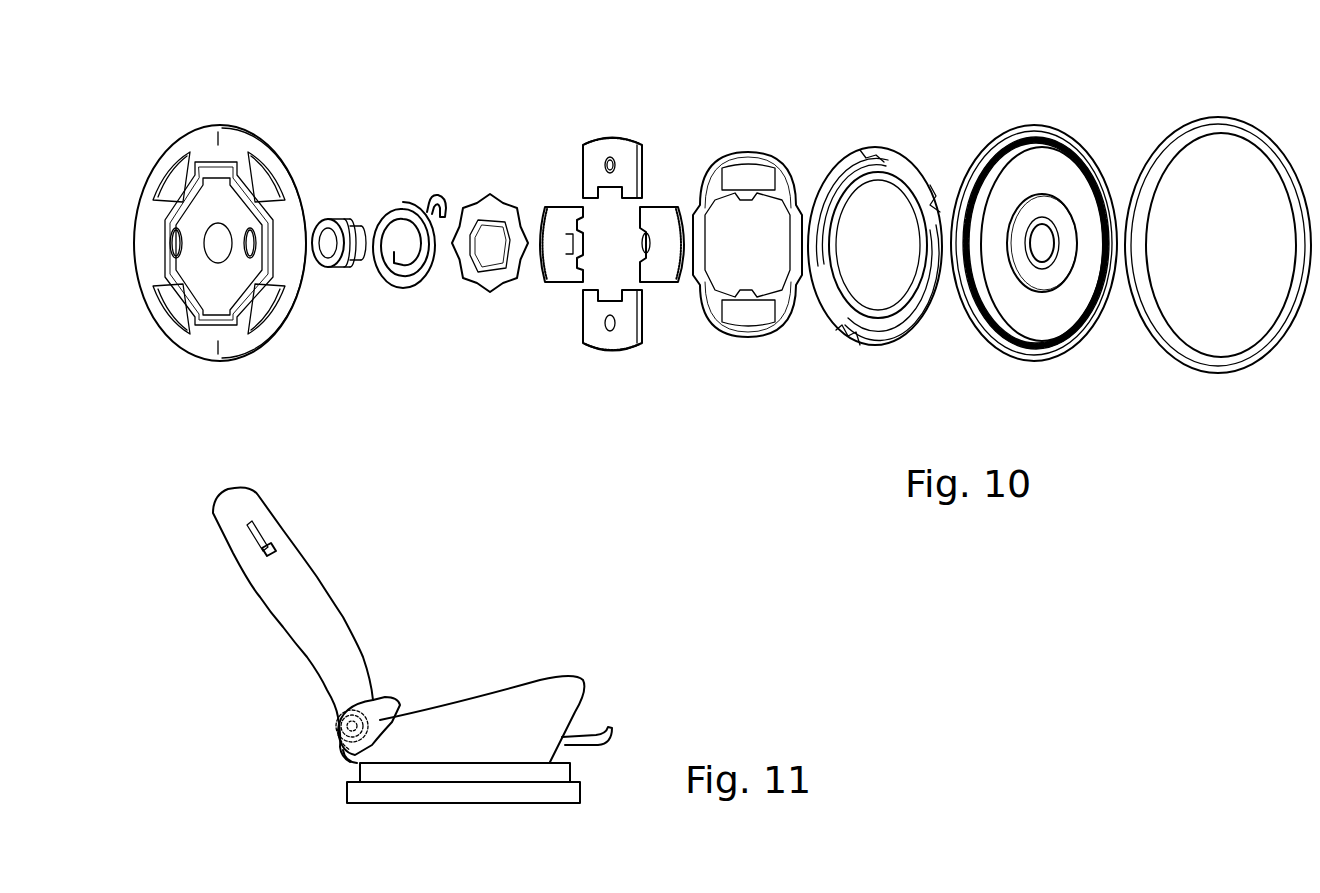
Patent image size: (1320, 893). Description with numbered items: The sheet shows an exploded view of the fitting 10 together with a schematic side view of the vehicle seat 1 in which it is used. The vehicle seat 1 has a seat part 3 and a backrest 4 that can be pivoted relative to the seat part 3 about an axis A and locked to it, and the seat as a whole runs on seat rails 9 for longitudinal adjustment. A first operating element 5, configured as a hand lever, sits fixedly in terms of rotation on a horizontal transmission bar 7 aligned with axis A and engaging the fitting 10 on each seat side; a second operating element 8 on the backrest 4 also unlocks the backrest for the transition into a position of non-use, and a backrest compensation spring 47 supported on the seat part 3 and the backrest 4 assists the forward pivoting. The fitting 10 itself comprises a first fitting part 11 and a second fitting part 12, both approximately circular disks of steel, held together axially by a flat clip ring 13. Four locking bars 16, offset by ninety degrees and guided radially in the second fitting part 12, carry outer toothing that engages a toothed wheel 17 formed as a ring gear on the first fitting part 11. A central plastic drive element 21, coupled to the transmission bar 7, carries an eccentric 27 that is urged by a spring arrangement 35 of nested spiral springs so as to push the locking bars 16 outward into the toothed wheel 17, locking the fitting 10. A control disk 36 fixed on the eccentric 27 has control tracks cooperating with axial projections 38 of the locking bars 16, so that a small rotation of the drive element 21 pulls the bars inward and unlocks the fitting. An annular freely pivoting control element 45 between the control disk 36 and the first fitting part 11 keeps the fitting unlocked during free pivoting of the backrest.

In FIG. 11, the vehicle seat 1 is at (450, 607).
In FIG. 11, the seat part 3 is at (503, 705).
In FIG. 11, the backrest 4 is at (317, 587).
In FIG. 11, the first operating element 5 is at (387, 707).
In FIG. 11, the transmission bar 7 is at (335, 717).
In FIG. 11, the second operating element 8 is at (277, 545).
In FIG. 11, the seat rails 9 is at (503, 795).
In FIG. 10, the fitting 10 is at (802, 355).
In FIG. 11, the fitting 10 is at (335, 728).
In FIG. 10, the first fitting part 11 is at (1078, 348).
In FIG. 10, the second fitting part 12 is at (198, 357).
In FIG. 10, the clip ring 13 is at (1220, 118).
In FIG. 10, the locking bar 16 is at (572, 210).
In FIG. 10, the toothed wheel 17 is at (975, 307).
In FIG. 10, the drive element 21 is at (343, 220).
In FIG. 10, the eccentric 27 is at (493, 210).
In FIG. 10, the spring arrangement 35 is at (428, 283).
In FIG. 10, the control disk 36 is at (780, 178).
In FIG. 10, the projection 38 is at (617, 157).
In FIG. 10, the freely pivoting control element 45 is at (898, 160).
In FIG. 11, the backrest compensation spring 47 is at (335, 740).